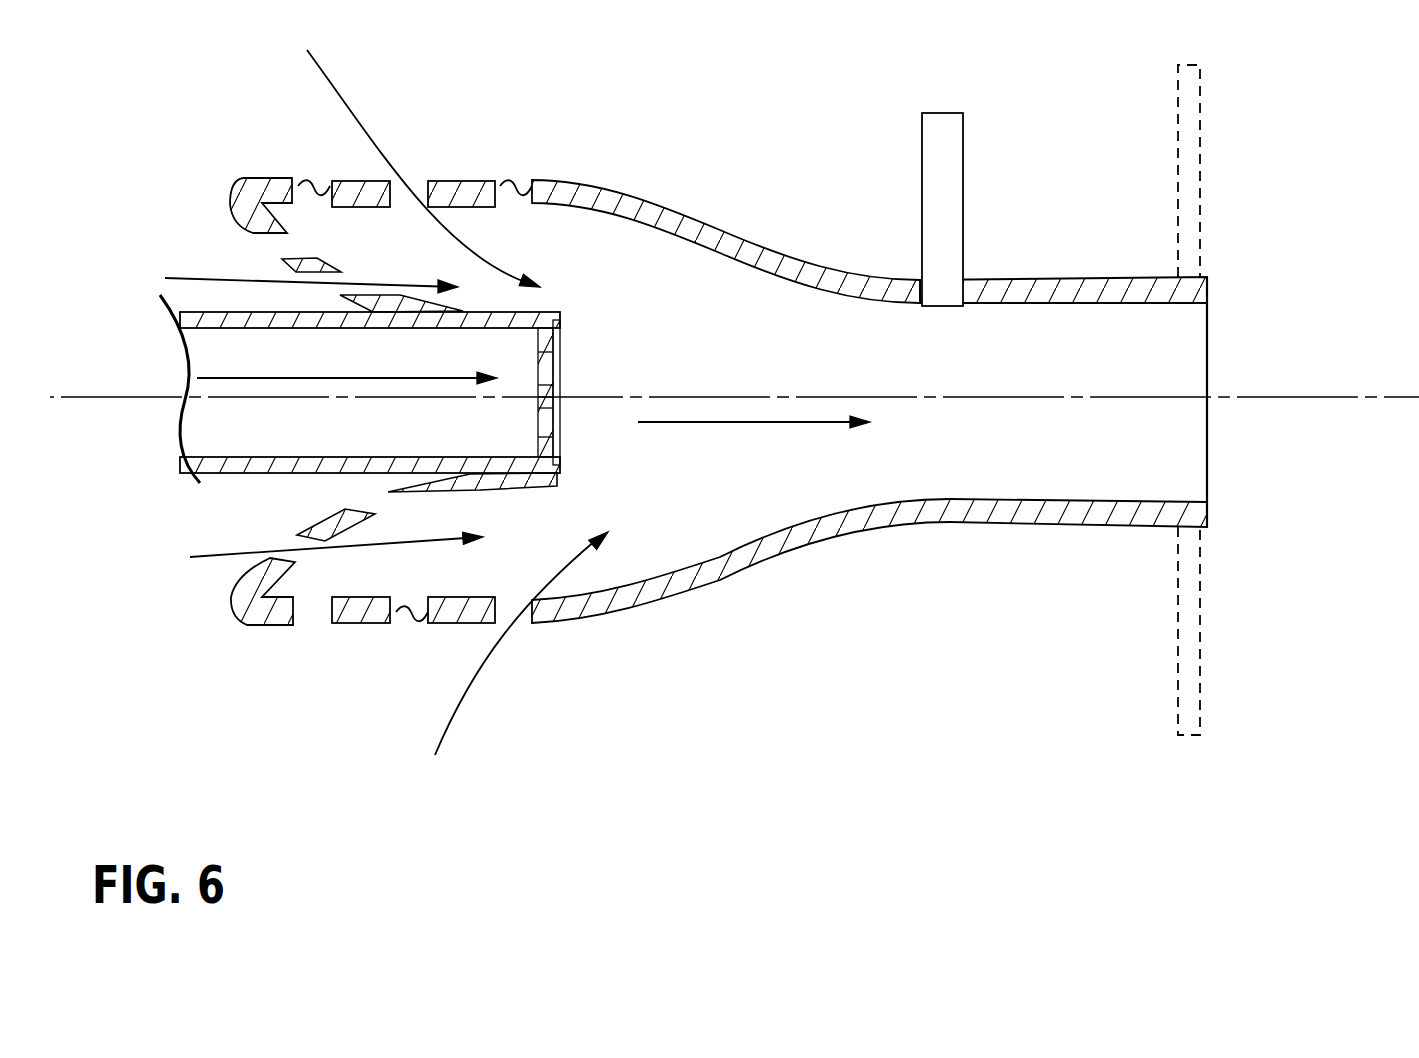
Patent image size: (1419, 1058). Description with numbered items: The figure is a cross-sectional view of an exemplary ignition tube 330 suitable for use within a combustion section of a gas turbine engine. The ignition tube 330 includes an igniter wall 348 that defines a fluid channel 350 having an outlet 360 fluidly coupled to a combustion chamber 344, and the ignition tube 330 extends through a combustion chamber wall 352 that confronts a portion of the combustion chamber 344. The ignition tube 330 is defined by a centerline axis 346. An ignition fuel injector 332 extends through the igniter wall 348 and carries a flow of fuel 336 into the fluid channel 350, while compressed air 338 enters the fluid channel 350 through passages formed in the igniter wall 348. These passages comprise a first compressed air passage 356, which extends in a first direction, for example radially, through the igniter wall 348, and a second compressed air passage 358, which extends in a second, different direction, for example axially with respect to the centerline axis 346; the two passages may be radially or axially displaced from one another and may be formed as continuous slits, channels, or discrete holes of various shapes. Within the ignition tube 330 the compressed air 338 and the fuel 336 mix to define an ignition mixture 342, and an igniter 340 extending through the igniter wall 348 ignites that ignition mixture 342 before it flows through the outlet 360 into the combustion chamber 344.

The ignition tube 330 is at (636, 26).
The ignition fuel injector 332 is at (230, 472).
The fuel 336 is at (247, 377).
The compressed air 338 is at (558, 733).
The igniter 340 is at (963, 170).
The ignition mixture 342 is at (800, 423).
The combustion chamber 344 is at (1305, 364).
The centerline axis 346 is at (1327, 393).
The igniter wall 348 is at (975, 523).
The fluid channel 350 is at (1110, 352).
The combustion chamber wall 352 is at (1202, 208).
The first compressed air passage 356 is at (305, 186).
The second compressed air passage 358 is at (296, 242).
The outlet 360 is at (1209, 385).